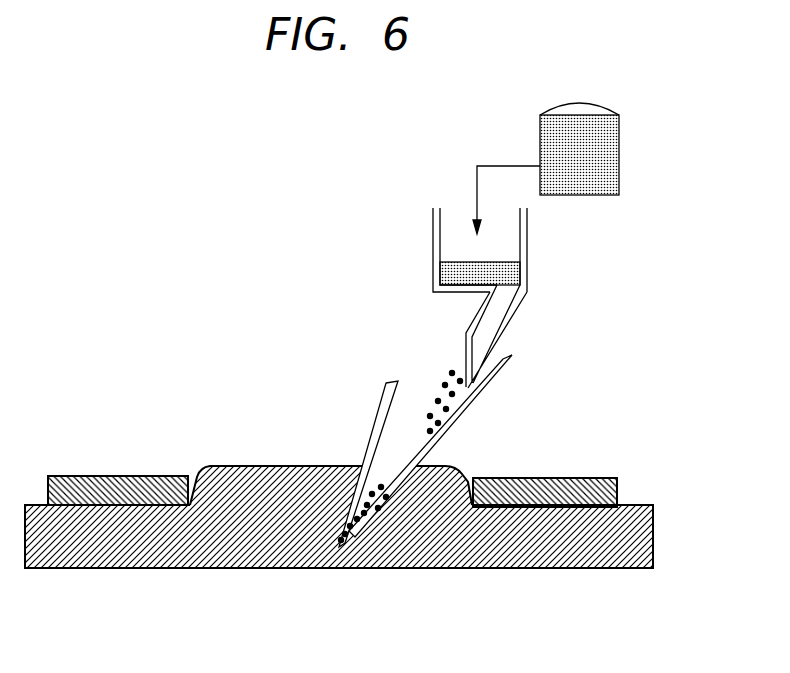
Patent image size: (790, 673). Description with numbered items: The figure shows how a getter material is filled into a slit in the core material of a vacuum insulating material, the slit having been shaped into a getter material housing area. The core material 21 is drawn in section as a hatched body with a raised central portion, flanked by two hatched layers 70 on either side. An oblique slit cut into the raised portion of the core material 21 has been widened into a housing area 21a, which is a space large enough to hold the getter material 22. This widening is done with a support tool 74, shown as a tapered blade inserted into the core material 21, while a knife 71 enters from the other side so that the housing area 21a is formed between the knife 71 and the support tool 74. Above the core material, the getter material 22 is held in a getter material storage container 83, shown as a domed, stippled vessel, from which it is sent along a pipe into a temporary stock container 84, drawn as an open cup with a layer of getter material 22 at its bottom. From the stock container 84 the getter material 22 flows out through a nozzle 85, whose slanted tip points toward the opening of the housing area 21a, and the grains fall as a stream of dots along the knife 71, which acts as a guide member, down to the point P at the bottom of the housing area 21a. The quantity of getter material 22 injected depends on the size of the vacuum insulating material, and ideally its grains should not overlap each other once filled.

The core material 21 is at (577, 555).
The housing area 21a is at (380, 474).
The getter material 22 is at (609, 157).
The electrode layer 70 is at (557, 478).
The knife 71 is at (487, 383).
The support tool 74 is at (378, 407).
The getter material storage container 83 is at (590, 103).
The temporary stock container 84 is at (507, 245).
The nozzle 85 is at (497, 318).
The deposition point P is at (338, 545).